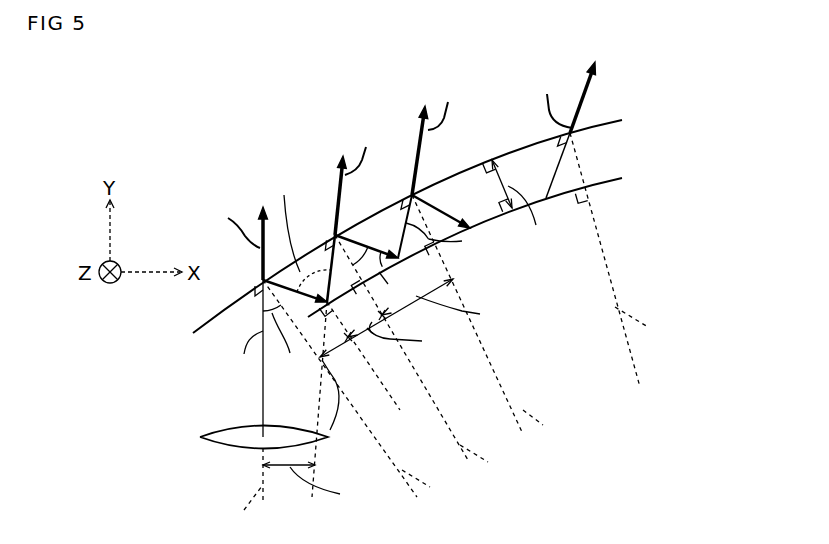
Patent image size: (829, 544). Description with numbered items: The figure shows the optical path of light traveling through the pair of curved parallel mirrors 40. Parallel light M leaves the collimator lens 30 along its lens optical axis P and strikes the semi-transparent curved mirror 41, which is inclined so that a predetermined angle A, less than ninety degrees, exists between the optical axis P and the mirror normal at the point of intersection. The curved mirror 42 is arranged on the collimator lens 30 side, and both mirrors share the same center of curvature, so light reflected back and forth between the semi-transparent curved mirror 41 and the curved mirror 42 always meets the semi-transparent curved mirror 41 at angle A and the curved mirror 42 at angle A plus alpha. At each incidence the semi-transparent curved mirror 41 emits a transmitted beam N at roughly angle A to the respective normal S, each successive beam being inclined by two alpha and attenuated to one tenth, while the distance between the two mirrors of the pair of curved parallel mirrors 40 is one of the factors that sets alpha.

The collimator lens 30 is at (241, 426).
The pair of curved parallel mirrors 40 is at (197, 133).
The semi-transparent curved mirror 41 is at (621, 122).
The curved mirror 42 is at (622, 178).